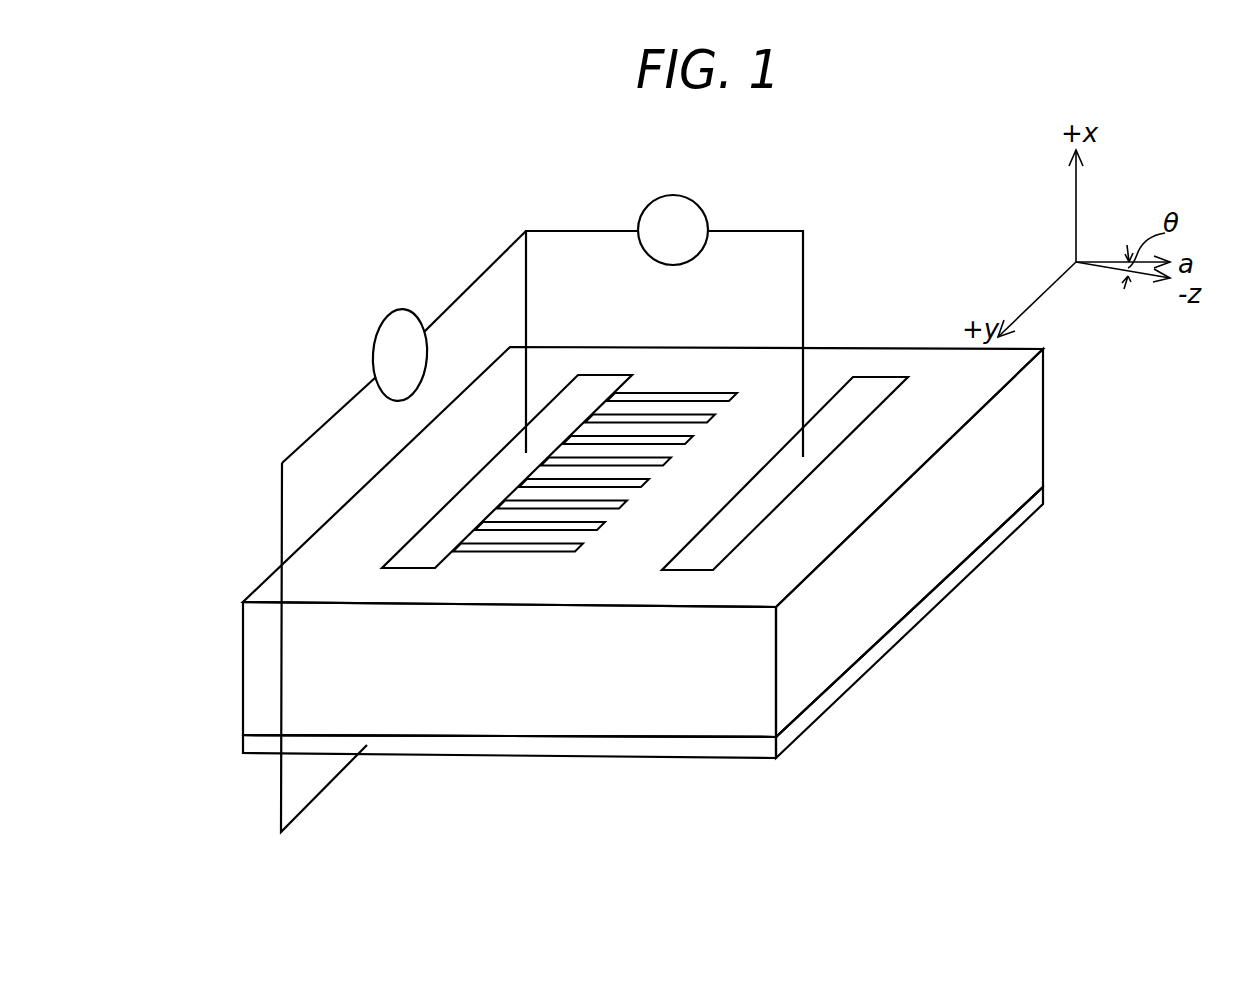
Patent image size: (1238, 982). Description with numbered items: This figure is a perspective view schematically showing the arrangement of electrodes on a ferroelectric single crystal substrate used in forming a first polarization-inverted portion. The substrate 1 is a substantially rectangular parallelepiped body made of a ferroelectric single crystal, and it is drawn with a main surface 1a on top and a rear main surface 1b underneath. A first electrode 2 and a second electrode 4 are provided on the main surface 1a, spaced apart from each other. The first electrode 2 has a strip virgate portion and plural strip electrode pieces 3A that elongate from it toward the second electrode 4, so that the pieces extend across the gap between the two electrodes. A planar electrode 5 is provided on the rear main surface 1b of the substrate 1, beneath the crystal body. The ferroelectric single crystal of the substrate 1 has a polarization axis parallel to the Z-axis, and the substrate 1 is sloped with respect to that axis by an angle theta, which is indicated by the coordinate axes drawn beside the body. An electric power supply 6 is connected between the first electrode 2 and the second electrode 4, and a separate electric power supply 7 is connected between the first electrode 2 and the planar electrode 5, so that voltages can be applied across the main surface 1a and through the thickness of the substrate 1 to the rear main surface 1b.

The substrate 1 is at (1013, 440).
The main surface 1a is at (938, 367).
The rear main surface 1b is at (998, 547).
The first electrode 2 is at (592, 383).
The strip electrode pieces 3A is at (653, 415).
The second electrode 4 is at (863, 400).
The planar electrode 5 is at (908, 625).
The electric power supply 6 is at (647, 207).
The electric power supply 7 is at (401, 310).